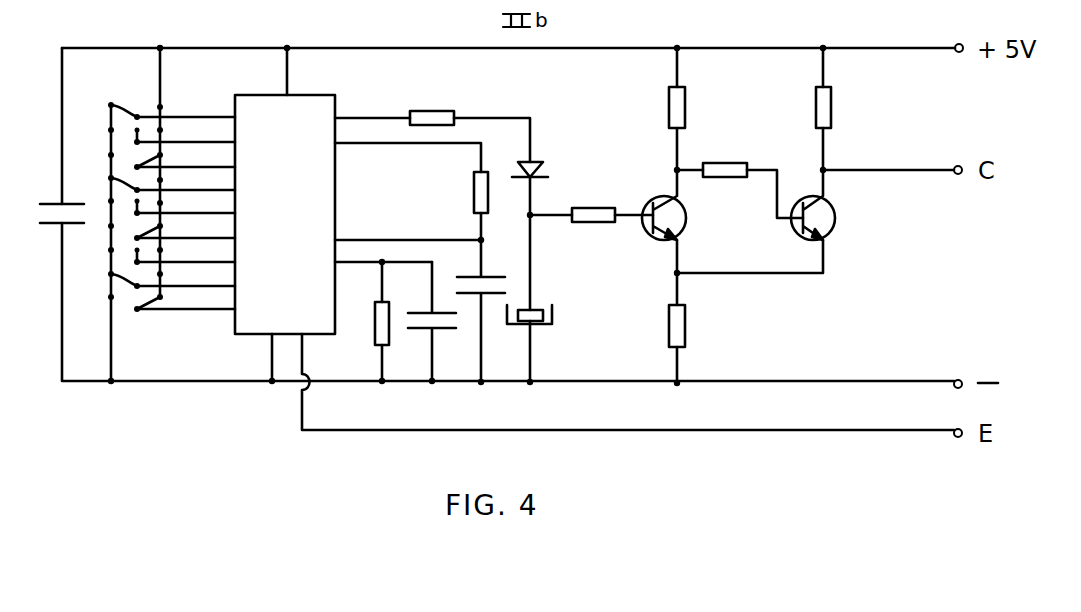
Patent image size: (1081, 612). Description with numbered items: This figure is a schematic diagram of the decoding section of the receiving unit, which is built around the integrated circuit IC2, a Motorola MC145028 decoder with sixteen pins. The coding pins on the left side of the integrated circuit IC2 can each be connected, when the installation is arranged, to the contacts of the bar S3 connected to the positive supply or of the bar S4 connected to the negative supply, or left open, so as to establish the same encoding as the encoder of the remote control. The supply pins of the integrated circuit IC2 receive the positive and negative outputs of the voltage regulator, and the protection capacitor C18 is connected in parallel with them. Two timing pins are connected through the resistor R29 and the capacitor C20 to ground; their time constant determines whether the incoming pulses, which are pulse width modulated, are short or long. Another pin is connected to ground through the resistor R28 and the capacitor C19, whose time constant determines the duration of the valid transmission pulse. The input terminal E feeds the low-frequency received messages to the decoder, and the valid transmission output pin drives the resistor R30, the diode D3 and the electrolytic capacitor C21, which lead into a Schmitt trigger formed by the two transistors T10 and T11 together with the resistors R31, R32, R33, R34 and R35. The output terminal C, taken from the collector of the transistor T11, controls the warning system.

The protection capacitor C18 is at (48, 228).
The bar S3 is at (181, 174).
The bar S4 is at (134, 241).
The integrated circuit IC2 is at (285, 191).
The resistor R28 is at (382, 321).
The resistor R29 is at (411, 191).
The resistor R30 is at (432, 122).
The resistor R31 is at (591, 232).
The resistor R32 is at (648, 109).
The resistor R33 is at (704, 328).
The resistor R34 is at (740, 176).
The resistor R35 is at (851, 109).
The capacitor C19 is at (423, 321).
The capacitor C20 is at (420, 311).
The electrolytic capacitor C21 is at (558, 298).
The diode D3 is at (543, 174).
The transistor T10 is at (689, 221).
The transistor T11 is at (783, 221).